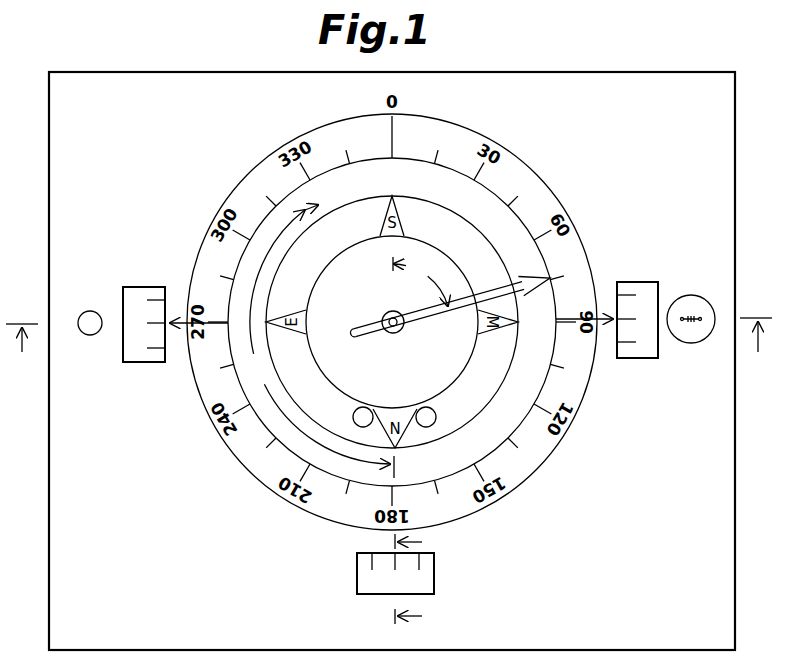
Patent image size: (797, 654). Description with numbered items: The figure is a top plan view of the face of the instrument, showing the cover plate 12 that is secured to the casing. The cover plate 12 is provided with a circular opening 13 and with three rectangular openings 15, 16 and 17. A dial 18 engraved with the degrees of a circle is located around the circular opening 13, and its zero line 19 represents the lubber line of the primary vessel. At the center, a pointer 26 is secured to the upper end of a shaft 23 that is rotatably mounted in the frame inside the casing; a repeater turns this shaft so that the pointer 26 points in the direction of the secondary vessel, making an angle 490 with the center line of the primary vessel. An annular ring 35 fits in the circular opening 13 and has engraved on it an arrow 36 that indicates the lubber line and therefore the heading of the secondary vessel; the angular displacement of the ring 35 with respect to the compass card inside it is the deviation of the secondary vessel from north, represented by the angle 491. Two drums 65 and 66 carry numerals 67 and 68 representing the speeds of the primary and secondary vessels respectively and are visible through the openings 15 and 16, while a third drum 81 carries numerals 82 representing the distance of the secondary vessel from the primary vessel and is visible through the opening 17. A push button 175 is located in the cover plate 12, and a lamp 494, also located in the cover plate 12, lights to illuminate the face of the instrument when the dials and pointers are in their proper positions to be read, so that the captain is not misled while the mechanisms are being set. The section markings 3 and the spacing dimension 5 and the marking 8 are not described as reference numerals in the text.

The section line 3 is at (389, 350).
The scale spacing dimension 5 is at (416, 580).
The rotatable ring 8 is at (326, 420).
The cover plate 12 is at (735, 500).
The circular opening 13 is at (527, 220).
The rectangular opening 15 is at (160, 323).
The rectangular opening 16 is at (628, 312).
The rectangular opening 17 is at (396, 583).
The dial 18 is at (548, 408).
The zero line 19 is at (394, 133).
The shaft 23 is at (390, 312).
The pointer 26 is at (433, 312).
The annular ring 35 is at (518, 412).
The arrow 36 is at (290, 205).
The drum 65 is at (145, 356).
The drum 66 is at (640, 352).
The numerals 67 is at (131, 316).
The numerals 68 is at (656, 298).
The drum 81 is at (357, 568).
The numerals 82 is at (398, 590).
The push button 175 is at (92, 336).
The angle 490 is at (420, 281).
The angle 491 is at (274, 296).
The lamp 494 is at (713, 306).